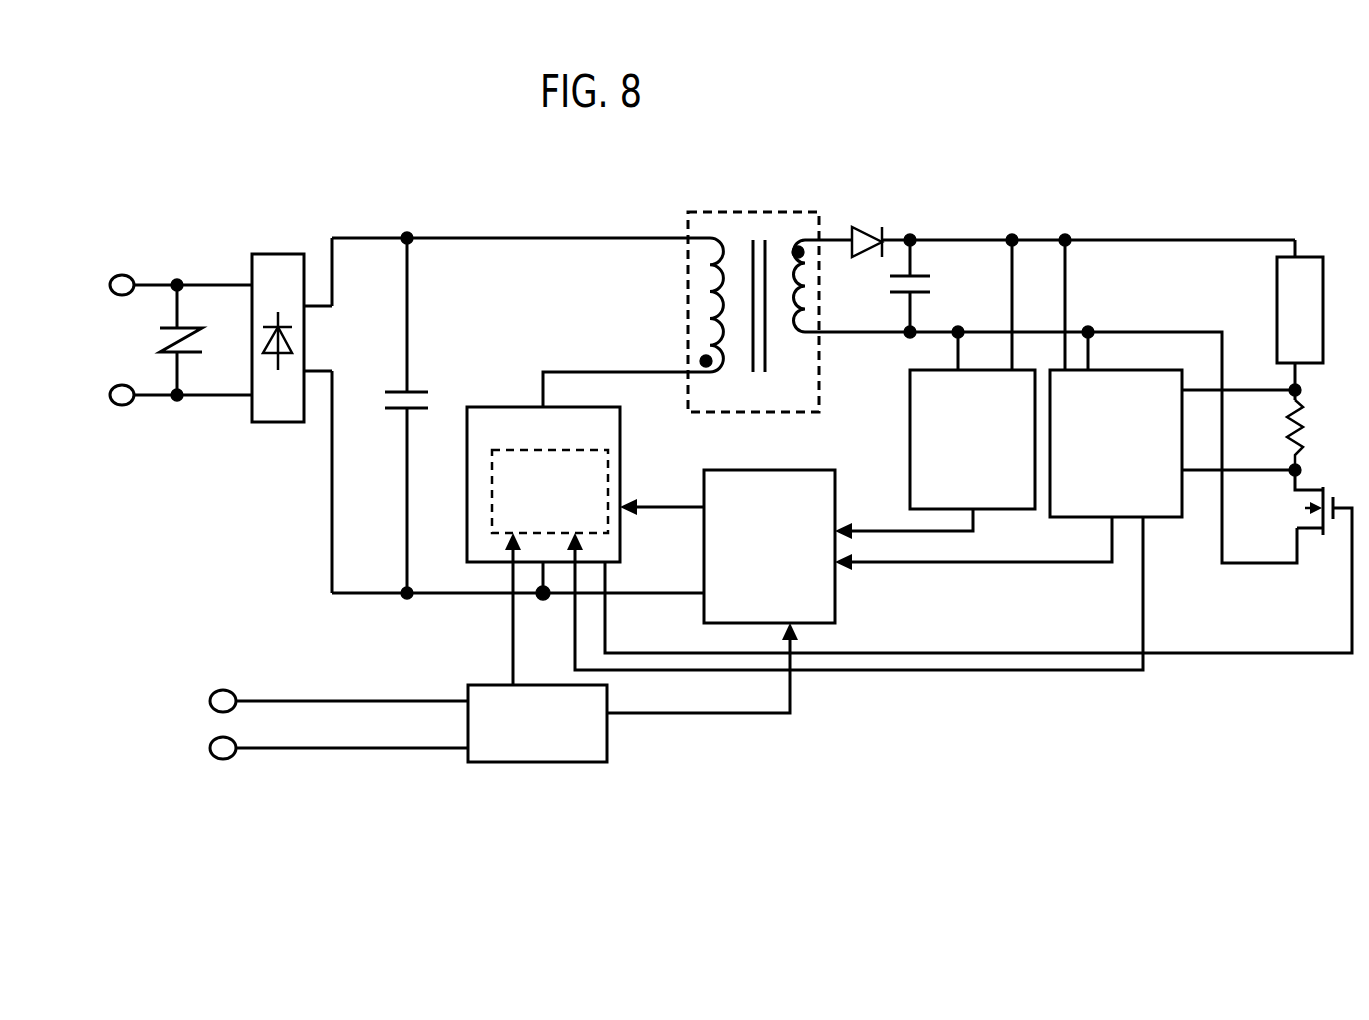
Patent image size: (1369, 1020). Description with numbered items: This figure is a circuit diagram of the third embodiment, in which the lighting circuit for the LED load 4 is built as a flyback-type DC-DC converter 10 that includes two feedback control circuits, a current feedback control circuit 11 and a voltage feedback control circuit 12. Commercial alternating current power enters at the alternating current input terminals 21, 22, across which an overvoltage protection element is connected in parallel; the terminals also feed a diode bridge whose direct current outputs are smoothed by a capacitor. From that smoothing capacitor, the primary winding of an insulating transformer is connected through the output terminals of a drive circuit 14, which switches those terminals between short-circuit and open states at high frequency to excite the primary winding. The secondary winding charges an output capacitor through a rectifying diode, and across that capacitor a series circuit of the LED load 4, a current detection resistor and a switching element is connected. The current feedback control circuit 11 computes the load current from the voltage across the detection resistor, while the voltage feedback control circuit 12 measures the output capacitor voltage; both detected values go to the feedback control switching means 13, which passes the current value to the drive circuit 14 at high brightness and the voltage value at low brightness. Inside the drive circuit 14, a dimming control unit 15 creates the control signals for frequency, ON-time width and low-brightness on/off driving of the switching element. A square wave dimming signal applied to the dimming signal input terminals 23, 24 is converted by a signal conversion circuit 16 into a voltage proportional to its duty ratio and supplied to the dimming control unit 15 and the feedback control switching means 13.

The DC-DC converter 10 is at (648, 180).
The alternating current input terminal 21 is at (128, 270).
The alternating current input terminal 22 is at (128, 410).
The dimming signal input terminal 23 is at (215, 687).
The dimming signal input terminal 24 is at (215, 762).
The LED load 4 is at (1312, 252).
The current feedback control circuit 11 is at (1167, 517).
The voltage feedback control circuit 12 is at (908, 426).
The feedback control switching means 13 is at (837, 595).
The drive circuit 14 is at (577, 440).
The dimming control unit 15 is at (610, 479).
The signal conversion circuit 16 is at (565, 762).